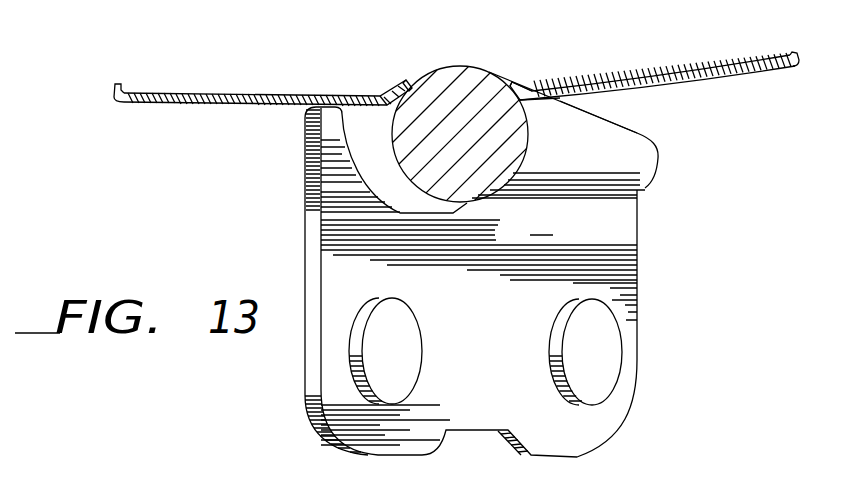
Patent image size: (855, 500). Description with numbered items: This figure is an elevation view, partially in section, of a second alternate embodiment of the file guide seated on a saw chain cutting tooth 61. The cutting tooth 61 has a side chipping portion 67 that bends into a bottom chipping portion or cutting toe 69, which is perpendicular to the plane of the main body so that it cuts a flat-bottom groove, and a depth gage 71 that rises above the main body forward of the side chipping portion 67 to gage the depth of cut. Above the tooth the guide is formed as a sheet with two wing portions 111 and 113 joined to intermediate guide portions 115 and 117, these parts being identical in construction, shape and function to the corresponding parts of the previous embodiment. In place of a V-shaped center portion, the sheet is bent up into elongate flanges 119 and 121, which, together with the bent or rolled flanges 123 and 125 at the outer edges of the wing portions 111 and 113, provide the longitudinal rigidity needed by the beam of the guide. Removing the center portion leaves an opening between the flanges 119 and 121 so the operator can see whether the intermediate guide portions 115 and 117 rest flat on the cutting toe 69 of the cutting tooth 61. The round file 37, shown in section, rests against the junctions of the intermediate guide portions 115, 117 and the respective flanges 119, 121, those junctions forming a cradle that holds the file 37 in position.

The file 37 is at (479, 197).
The cutting tooth 61 is at (643, 233).
The side chipping portion 67 is at (643, 162).
The cutting toe 69 is at (627, 118).
The depth gage 71 is at (332, 132).
The wing portion 111 is at (236, 93).
The wing portion 113 is at (687, 72).
The intermediate guide portion 115 is at (383, 97).
The intermediate guide portion 117 is at (535, 88).
The bent-up elongate flange 119 is at (408, 80).
The bent-up elongate flange 121 is at (510, 82).
The bent or rolled flange 123 is at (113, 89).
The bent or rolled flange 125 is at (792, 52).